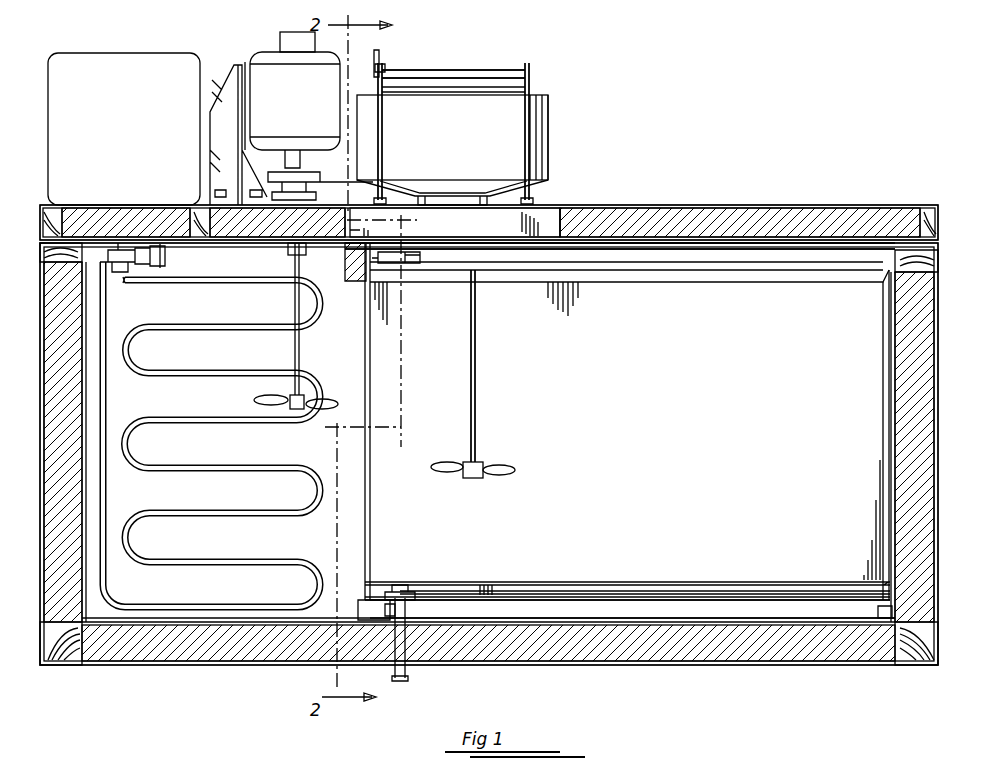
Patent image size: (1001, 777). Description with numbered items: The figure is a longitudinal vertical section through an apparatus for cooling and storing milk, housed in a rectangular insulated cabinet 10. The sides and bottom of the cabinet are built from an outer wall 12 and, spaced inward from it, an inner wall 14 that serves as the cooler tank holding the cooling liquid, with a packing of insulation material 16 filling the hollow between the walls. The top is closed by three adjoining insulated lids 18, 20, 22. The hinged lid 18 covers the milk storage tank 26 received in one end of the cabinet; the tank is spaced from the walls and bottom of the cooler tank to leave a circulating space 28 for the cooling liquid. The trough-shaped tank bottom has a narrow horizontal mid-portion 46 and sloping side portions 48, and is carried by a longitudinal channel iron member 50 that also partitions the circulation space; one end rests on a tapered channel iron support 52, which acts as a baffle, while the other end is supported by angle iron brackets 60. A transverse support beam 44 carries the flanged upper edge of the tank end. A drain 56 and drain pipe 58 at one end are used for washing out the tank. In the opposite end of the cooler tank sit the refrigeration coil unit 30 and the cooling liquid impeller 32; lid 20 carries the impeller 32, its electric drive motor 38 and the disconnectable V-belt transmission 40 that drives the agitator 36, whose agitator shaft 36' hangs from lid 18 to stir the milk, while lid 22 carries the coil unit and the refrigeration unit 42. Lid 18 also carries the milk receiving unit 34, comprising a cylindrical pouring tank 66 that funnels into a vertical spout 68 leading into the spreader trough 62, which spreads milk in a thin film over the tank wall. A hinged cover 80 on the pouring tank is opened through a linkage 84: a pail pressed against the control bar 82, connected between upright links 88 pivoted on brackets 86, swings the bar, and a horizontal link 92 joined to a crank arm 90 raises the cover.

The insulated cabinet 10 is at (119, 673).
The outer wall 12 is at (40, 362).
The inner wall 14 is at (83, 492).
The insulation material 16 is at (40, 452).
The insulated lid 18 is at (735, 205).
The insulated lid 20 is at (322, 205).
The insulated lid 22 is at (40, 222).
The milk storage tank 26 is at (646, 414).
The circulating space 28 is at (895, 495).
The refrigeration coil unit 30 is at (190, 471).
The cooling liquid impeller 32 is at (284, 399).
The milk receiving unit 34 is at (562, 124).
The agitator means 36 is at (473, 385).
The agitator shaft 36' is at (494, 366).
The electric drive motor 38 is at (330, 54).
The V-belt transmission 40 is at (322, 178).
The refrigeration unit 42 is at (56, 82).
The support beam 44 is at (355, 281).
The horizontal mid-portion 46 is at (532, 596).
The sloping side portions 48 is at (632, 583).
The channel iron member 50 is at (460, 596).
The tapered channel iron support 52 is at (384, 607).
The drain 56 is at (404, 592).
The drain pipe 58 is at (408, 678).
The angle iron brackets 60 is at (900, 622).
The spreader trough 62 is at (398, 264).
The pouring tank 66 is at (461, 158).
The spout 68 is at (455, 248).
The hinged cover 80 is at (492, 86).
The control bar 82 is at (452, 70).
The linkage 84 is at (552, 76).
The brackets 86 is at (520, 203).
The upright links 88 is at (385, 140).
The crank arm 90 is at (384, 64).
The horizontal link 92 is at (375, 64).